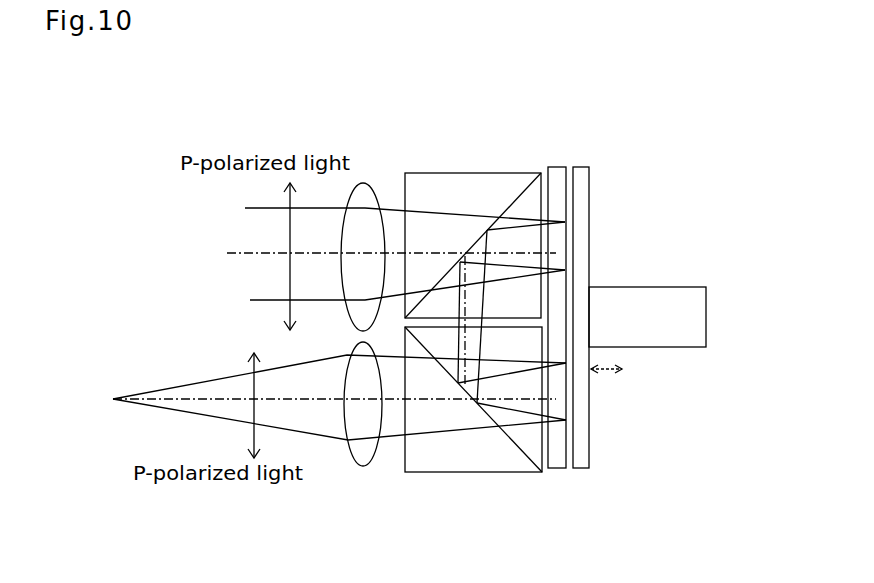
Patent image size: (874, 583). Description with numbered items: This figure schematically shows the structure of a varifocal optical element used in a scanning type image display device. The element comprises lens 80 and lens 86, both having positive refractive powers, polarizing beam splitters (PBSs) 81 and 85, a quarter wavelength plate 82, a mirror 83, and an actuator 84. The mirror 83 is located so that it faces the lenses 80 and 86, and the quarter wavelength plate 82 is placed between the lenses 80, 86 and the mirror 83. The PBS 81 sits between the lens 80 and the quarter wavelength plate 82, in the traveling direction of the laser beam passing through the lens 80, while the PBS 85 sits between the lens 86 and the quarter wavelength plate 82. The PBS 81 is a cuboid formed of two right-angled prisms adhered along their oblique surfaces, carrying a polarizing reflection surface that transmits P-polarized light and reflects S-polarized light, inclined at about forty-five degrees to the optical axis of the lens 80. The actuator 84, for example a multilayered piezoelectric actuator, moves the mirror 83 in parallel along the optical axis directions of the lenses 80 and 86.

The lens 80 is at (363, 183).
The polarizing beam splitter (PBS) 81 is at (472, 181).
The ¼ wavelength plate 82 is at (558, 470).
The mirror 83 is at (581, 167).
The actuator 84 is at (677, 287).
The polarizing beam splitter (PBS) 85 is at (470, 460).
The lens 86 is at (363, 465).